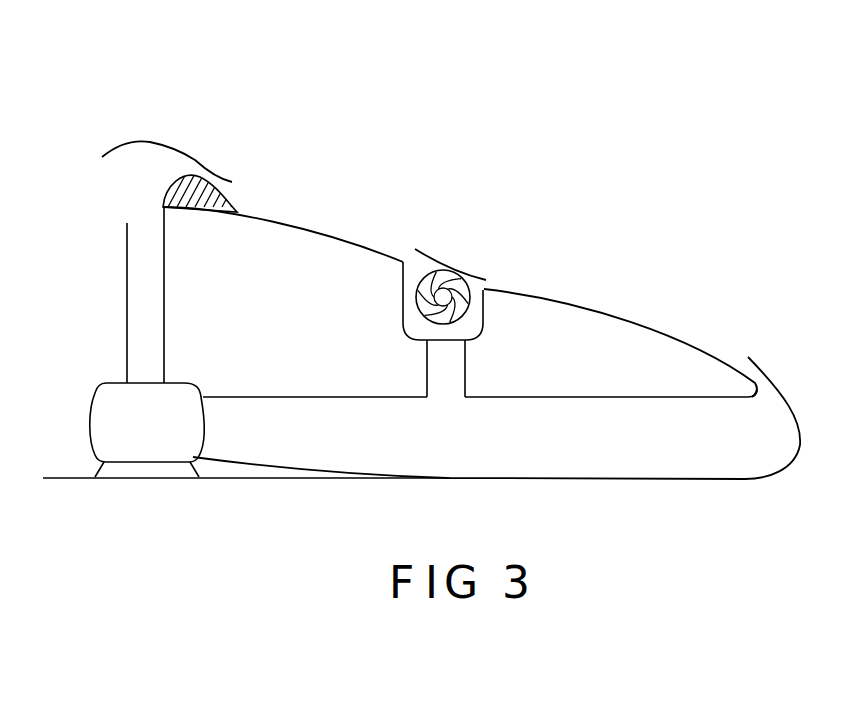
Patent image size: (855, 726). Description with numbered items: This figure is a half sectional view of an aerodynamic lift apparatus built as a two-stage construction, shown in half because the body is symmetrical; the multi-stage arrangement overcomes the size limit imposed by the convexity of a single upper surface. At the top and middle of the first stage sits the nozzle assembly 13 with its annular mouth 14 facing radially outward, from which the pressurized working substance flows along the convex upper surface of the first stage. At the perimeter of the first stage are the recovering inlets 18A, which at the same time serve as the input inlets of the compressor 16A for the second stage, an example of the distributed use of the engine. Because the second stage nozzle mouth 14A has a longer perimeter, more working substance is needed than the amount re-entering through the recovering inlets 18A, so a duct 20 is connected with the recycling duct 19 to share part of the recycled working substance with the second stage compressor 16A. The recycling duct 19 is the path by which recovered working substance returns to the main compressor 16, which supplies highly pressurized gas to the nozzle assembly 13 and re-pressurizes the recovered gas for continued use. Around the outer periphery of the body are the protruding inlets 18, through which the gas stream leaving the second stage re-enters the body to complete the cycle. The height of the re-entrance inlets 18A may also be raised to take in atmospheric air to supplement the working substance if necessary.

The nozzle assembly 13 is at (177, 135).
The annular mouth 14 is at (237, 192).
The second stage nozzle mouth 14A is at (488, 282).
The compressor 16 is at (147, 342).
The compressor for the second stage 16A is at (403, 308).
The protruding inlets 18 is at (750, 367).
The recovering inlets for the first stage 18A is at (415, 253).
The recycling duct 19 is at (496, 418).
The duct 20 is at (460, 375).